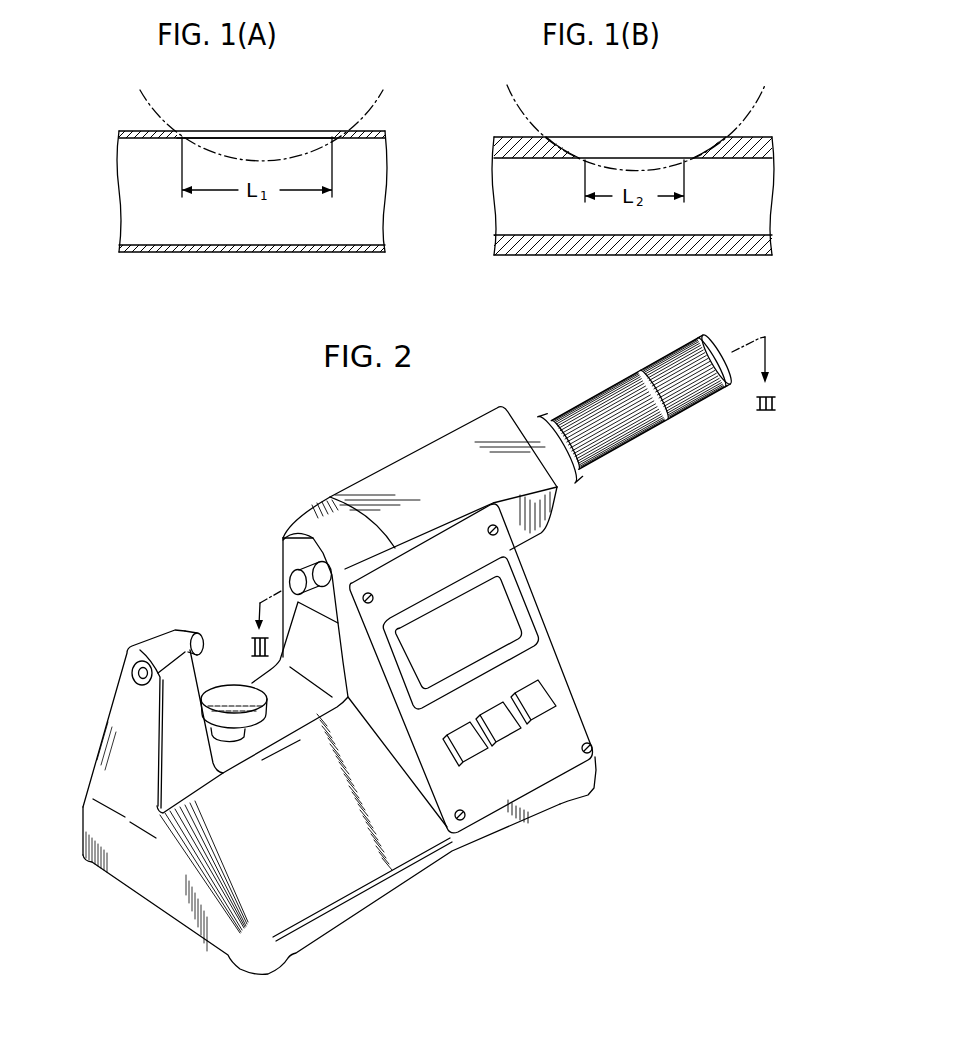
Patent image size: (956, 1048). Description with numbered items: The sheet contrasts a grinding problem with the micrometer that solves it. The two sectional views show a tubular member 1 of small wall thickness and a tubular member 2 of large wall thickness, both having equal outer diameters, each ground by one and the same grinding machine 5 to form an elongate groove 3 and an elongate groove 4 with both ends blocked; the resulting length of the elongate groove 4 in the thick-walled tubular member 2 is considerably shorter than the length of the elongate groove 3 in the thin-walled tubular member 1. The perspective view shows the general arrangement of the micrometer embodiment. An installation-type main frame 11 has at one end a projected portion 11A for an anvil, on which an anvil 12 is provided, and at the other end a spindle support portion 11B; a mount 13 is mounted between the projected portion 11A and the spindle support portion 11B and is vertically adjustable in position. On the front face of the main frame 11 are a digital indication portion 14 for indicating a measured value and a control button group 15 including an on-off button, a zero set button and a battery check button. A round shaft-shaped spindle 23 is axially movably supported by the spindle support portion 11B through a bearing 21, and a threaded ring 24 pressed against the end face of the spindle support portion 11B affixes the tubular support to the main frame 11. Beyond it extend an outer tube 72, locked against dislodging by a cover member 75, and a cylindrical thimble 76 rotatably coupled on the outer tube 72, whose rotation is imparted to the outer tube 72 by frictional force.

In FIG. 1A, the tubular member of a small wall thickness 1 is at (384, 133).
In FIG. 1B, the tubular member of a large wall thickness 2 is at (772, 147).
In FIG. 1A, the elongate groove 3 is at (263, 133).
In FIG. 1B, the elongate groove 4 is at (637, 147).
In FIG. 1A, the grinding machine 5 is at (375, 99).
In FIG. 1B, the grinding machine 5 is at (747, 110).
In FIG. 2, the main frame 11 is at (368, 867).
In FIG. 2, the projected portion for an anvil 11A is at (123, 697).
In FIG. 2, the spindle support portion 11B is at (423, 460).
In FIG. 2, the anvil 12 is at (188, 636).
In FIG. 2, the mount 13 is at (222, 693).
In FIG. 2, the digital indication portion 14 is at (507, 630).
In FIG. 2, the control button group 15 is at (477, 747).
In FIG. 2, the bearing 21 is at (303, 545).
In FIG. 2, the spindle 23 is at (300, 569).
In FIG. 2, the threaded ring 24 is at (533, 423).
In FIG. 2, the outer tube 72 is at (615, 440).
In FIG. 2, the cover member 75 is at (715, 344).
In FIG. 2, the thimble 76 is at (690, 407).